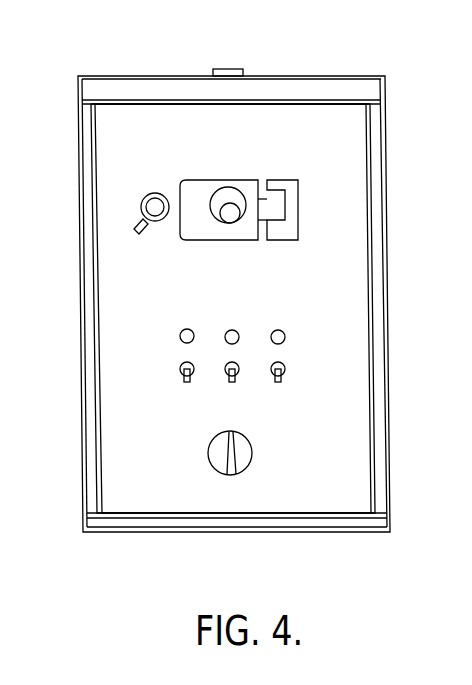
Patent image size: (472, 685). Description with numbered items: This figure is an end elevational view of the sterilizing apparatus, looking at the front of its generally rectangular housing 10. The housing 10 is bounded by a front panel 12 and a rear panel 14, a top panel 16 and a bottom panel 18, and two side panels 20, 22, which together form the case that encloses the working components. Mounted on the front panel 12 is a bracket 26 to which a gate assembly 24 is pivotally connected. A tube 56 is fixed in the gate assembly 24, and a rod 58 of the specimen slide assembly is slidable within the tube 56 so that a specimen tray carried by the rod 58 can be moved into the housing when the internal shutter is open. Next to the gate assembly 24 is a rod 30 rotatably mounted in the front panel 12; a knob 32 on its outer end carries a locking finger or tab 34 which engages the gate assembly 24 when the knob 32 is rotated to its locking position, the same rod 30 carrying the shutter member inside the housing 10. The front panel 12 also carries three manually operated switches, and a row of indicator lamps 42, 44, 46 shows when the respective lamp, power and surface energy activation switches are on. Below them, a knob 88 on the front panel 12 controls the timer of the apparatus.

The housing 10 is at (97, 70).
The front panel 12 is at (331, 130).
The rear panel 14 is at (290, 131).
The top panel 16 is at (176, 76).
The bottom panel 18 is at (143, 533).
The side panel 20 is at (78, 122).
The side panel 22 is at (384, 117).
The gate assembly 24 is at (195, 178).
The bracket 26 is at (300, 188).
The rod 30 is at (155, 207).
The knob 32 is at (134, 208).
The locking finger 34 is at (137, 227).
The indicator lamp 42 is at (180, 336).
The indicator lamp 44 is at (226, 333).
The indicator lamp 46 is at (285, 340).
The tube 56 is at (233, 186).
The rod 58 is at (228, 220).
The knob 88 is at (227, 482).